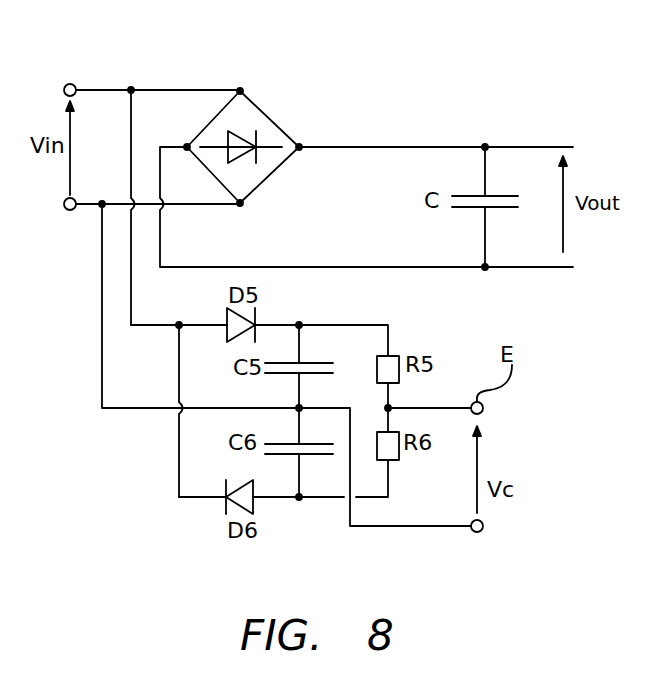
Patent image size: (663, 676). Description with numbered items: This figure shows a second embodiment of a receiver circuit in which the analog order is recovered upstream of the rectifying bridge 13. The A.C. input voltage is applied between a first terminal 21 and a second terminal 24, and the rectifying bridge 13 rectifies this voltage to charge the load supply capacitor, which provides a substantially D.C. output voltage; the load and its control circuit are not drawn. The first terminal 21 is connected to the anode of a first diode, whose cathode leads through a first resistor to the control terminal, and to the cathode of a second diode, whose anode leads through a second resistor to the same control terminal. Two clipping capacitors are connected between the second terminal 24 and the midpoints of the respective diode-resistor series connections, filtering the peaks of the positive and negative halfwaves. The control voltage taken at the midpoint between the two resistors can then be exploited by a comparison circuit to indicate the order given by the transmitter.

The terminal 21 is at (68, 84).
The terminal 24 is at (66, 209).
The rectifying bridge 13 is at (273, 110).